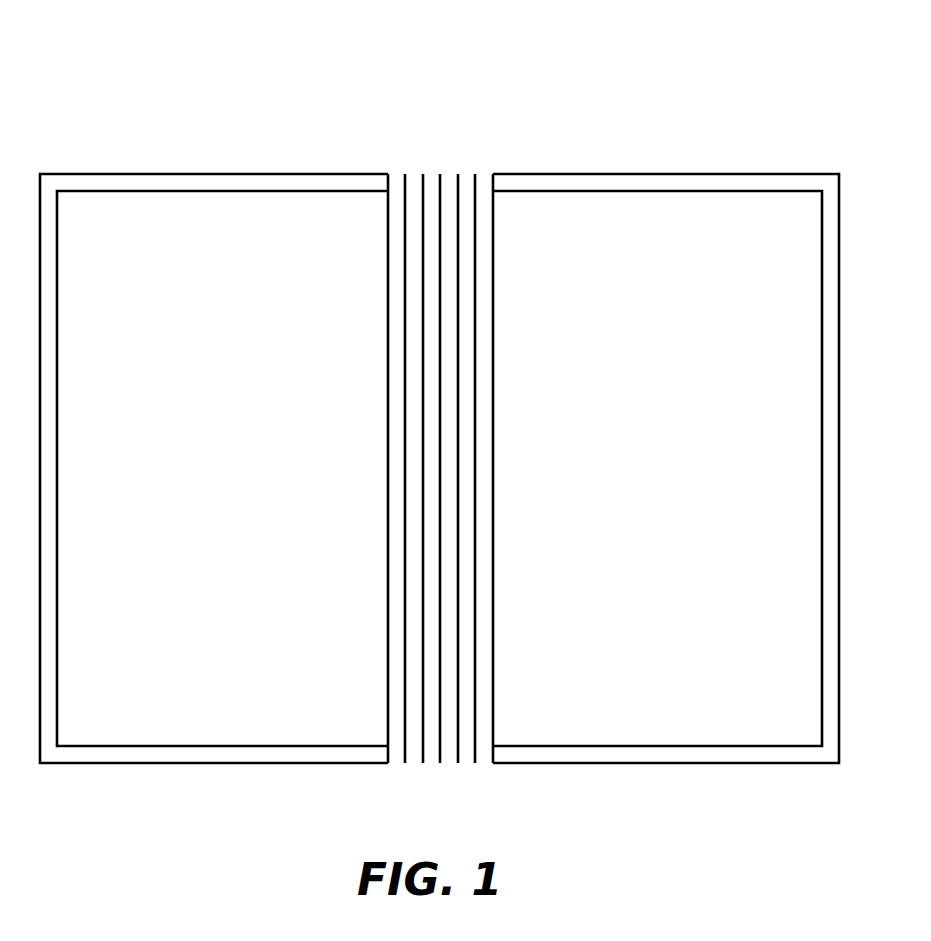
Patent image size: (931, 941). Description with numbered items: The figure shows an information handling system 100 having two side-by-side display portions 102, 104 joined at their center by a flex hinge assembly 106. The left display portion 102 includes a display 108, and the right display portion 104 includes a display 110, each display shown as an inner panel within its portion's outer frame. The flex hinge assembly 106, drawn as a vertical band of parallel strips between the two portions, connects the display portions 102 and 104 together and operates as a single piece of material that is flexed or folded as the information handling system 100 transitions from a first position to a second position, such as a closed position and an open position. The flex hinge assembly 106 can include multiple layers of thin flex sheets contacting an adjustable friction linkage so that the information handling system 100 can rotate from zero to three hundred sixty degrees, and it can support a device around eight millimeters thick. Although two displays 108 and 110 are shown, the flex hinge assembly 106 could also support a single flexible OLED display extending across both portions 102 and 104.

The information handling system 100 is at (736, 88).
The display portion 102 is at (195, 173).
The display portion 104 is at (683, 173).
The flex hinge assembly 106 is at (421, 190).
The display 108 is at (300, 210).
The display 110 is at (595, 210).